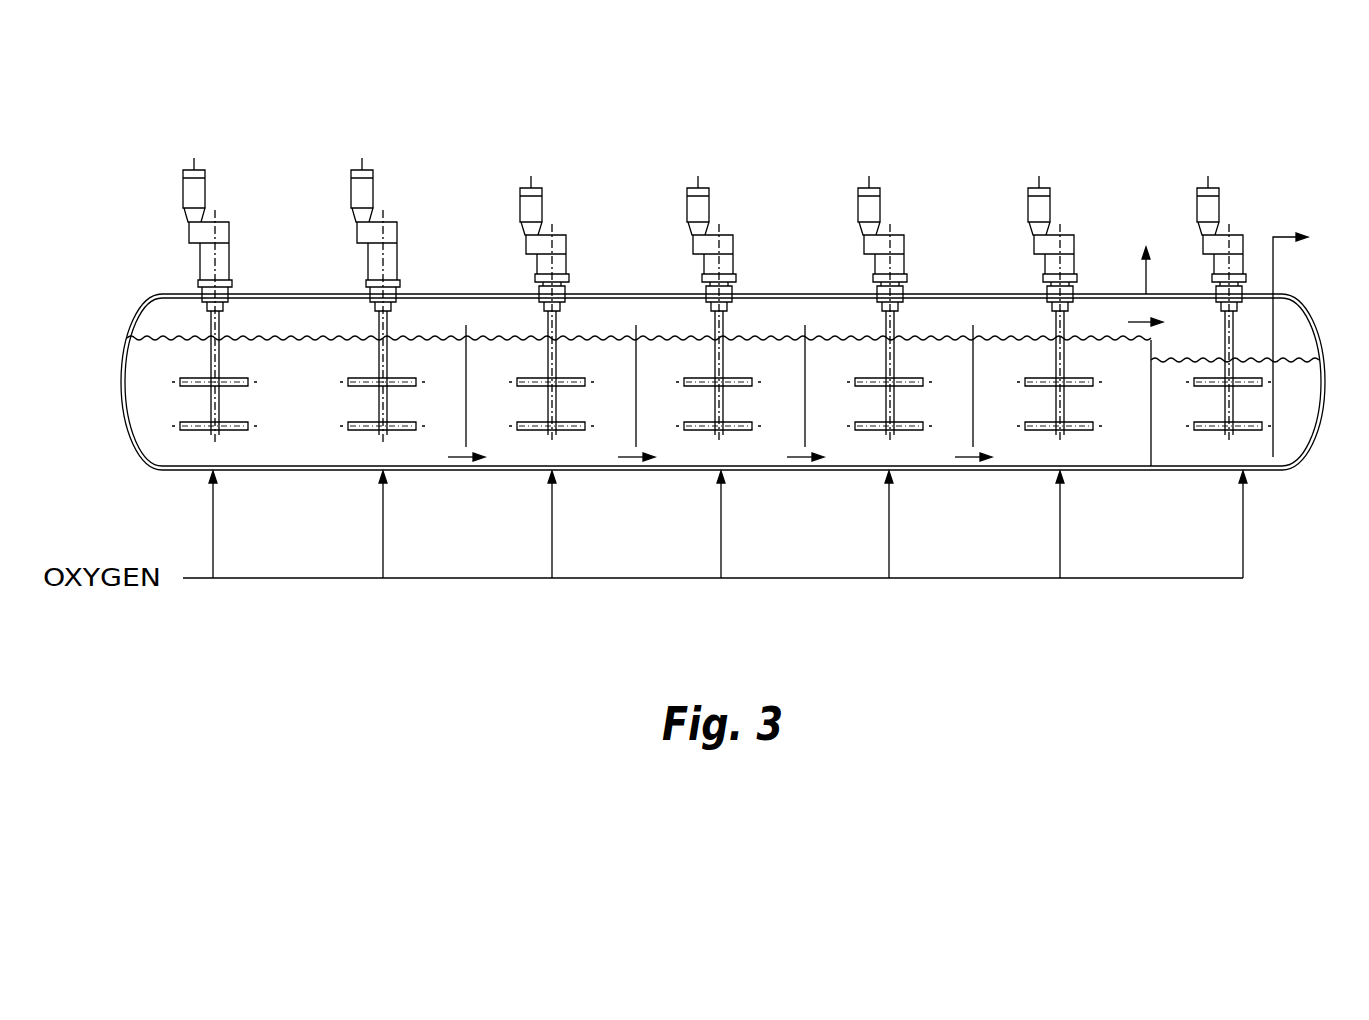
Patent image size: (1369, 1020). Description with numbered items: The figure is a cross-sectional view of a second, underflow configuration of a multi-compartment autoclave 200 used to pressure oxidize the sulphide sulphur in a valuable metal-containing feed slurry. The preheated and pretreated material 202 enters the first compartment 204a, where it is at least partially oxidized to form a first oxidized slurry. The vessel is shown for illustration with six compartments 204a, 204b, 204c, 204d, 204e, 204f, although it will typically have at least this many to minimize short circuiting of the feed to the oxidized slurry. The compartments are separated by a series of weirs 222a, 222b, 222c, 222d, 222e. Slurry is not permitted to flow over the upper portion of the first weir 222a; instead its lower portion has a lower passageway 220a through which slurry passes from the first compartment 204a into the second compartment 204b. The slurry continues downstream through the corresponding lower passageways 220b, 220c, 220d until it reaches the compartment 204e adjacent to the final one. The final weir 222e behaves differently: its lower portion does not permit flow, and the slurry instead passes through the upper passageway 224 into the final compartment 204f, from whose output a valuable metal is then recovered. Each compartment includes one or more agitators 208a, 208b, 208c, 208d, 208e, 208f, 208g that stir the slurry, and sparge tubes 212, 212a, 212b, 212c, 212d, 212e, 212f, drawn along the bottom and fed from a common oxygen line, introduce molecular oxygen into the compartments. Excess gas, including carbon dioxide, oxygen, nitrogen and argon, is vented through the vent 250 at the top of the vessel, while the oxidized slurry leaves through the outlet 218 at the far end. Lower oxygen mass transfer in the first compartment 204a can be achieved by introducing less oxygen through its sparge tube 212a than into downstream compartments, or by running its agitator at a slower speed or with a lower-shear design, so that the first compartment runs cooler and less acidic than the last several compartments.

The multi-compartment autoclave 200 is at (115, 427).
The preheated and pretreated material 202 is at (173, 281).
The first compartment 204a is at (314, 383).
The second compartment 204b is at (551, 383).
The third compartment 204c is at (720, 383).
The fourth compartment 204d is at (889, 383).
The fifth compartment 204e is at (1062, 383).
The final compartment 204f is at (1216, 383).
The agitator 208a is at (214, 283).
The agitator 208b is at (381, 283).
The agitator 208c is at (551, 296).
The agitator 208d is at (718, 296).
The agitator 208e is at (889, 293).
The agitator 208f is at (1058, 293).
The agitator 208g is at (1228, 296).
The sparge tube 212 is at (713, 524).
The sparge tube 212a is at (415, 524).
The sparge tube 212b is at (587, 524).
The sparge tube 212c is at (759, 524).
The sparge tube 212d is at (920, 524).
The sparge tube 212e is at (1092, 524).
The sparge tube 212f is at (1275, 524).
The product outlet 218 is at (1319, 341).
The lower passageway 220a is at (455, 460).
The lower passageway 220b is at (625, 460).
The lower passageway 220c is at (794, 460).
The lower passageway 220d is at (962, 460).
The first weir 222a is at (466, 368).
The weir 222b is at (636, 368).
The weir 222c is at (805, 368).
The weir 222d is at (973, 368).
The final weir 222e is at (1151, 390).
The upper passageway 224 is at (1170, 335).
The vent 250 is at (1142, 254).